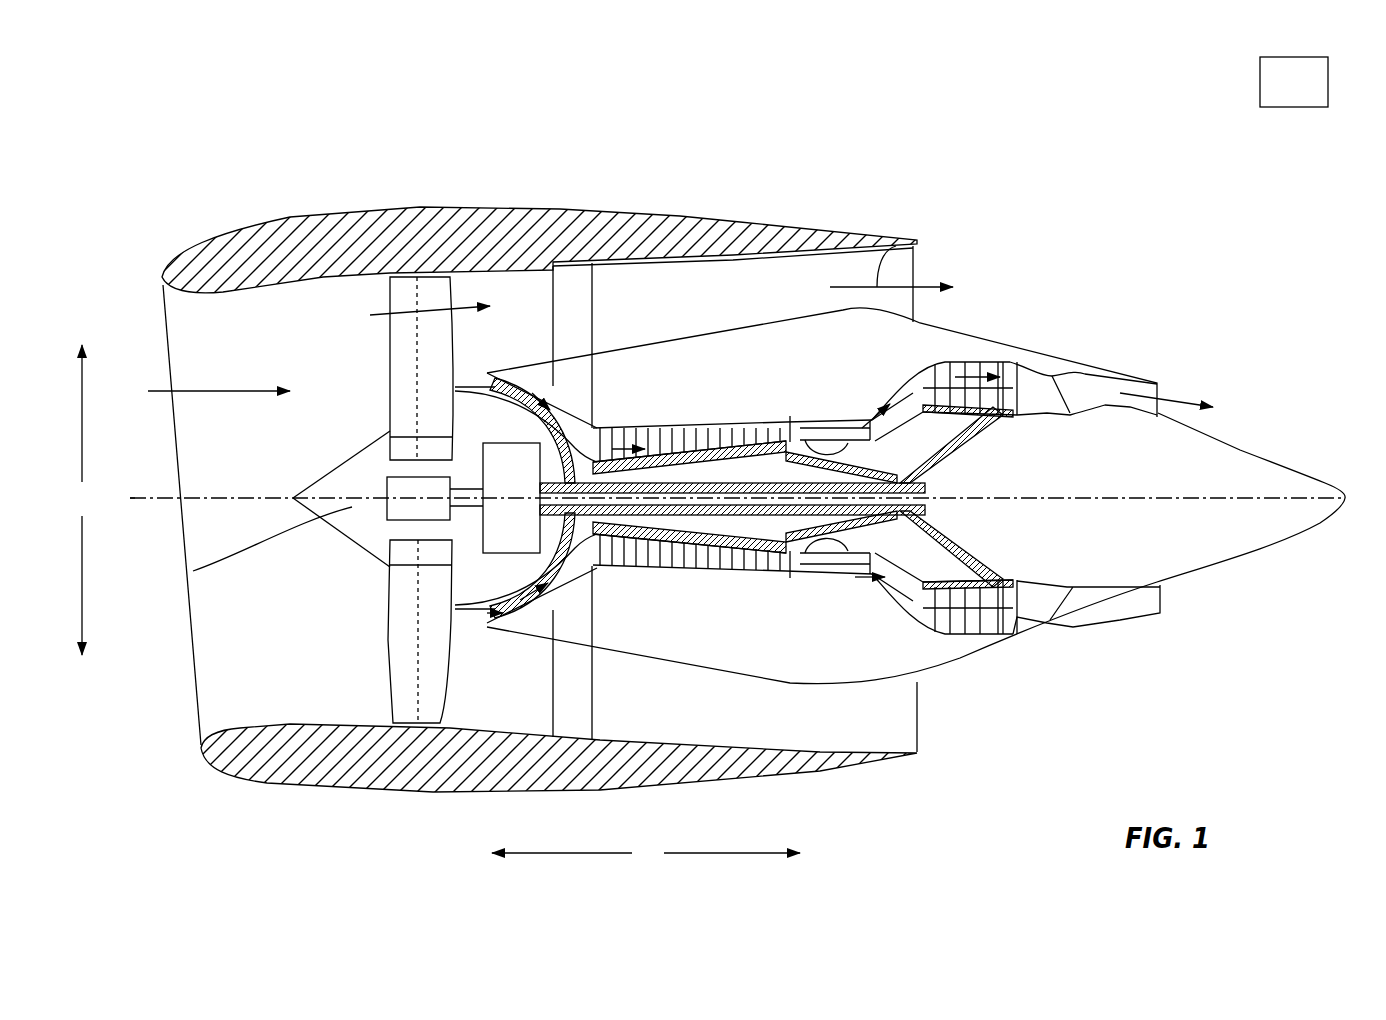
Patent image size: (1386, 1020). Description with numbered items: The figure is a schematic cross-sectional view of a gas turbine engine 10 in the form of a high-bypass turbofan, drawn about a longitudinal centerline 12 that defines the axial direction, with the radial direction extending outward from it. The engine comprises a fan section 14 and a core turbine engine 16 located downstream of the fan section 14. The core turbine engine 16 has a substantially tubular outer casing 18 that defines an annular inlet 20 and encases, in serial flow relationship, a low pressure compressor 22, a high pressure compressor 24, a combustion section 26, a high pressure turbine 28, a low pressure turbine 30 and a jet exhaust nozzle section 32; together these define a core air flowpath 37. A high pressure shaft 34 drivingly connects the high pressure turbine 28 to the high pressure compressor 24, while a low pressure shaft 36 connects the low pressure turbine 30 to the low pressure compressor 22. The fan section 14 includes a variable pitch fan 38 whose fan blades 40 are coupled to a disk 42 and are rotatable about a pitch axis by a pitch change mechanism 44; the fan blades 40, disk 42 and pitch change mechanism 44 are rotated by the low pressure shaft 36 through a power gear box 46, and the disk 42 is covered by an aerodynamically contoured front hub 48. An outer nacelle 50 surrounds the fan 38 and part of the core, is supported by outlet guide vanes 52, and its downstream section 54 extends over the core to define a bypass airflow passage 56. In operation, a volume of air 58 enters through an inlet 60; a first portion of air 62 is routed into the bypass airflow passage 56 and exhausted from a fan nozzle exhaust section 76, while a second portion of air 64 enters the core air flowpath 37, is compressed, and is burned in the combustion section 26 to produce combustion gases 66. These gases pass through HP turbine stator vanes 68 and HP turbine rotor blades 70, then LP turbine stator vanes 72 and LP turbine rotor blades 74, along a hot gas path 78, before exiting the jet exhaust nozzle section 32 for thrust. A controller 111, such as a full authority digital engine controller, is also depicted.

The gas turbine engine 10 is at (1072, 222).
The longitudinal centerline 12 is at (1095, 498).
The fan section 14 is at (348, 298).
The core turbine engine 16 is at (720, 378).
The outer casing 18 is at (765, 673).
The annular inlet 20 is at (490, 612).
The low pressure compressor 22 is at (540, 563).
The high pressure compressor 24 is at (625, 565).
The combustion section 26 is at (807, 578).
The high pressure turbine 28 is at (968, 552).
The low pressure turbine 30 is at (1005, 640).
The jet exhaust nozzle section 32 is at (1073, 622).
The high pressure shaft 34 is at (830, 468).
The low pressure shaft 36 is at (958, 450).
The core air flowpath 37 is at (585, 568).
The variable pitch fan 38 is at (349, 560).
The fan blades 40 is at (388, 658).
The disk 42 is at (388, 458).
The pitch change mechanism 44 is at (387, 481).
The power gear box 46 is at (597, 425).
The front hub 48 is at (195, 572).
The outer nacelle 50 is at (440, 795).
The outlet guide vanes 52 is at (593, 292).
The downstream section 54 is at (862, 240).
The bypass airflow passage 56 is at (752, 304).
The volume of air 58 is at (218, 390).
The inlet 60 is at (197, 728).
The first portion of air 62 is at (408, 328).
The second portion of air 64 is at (487, 372).
The combustion gases 66 is at (857, 418).
The HP turbine stator vanes 68 is at (820, 583).
The HP turbine rotor blades 70 is at (935, 528).
The LP turbine stator vanes 72 is at (920, 625).
The LP turbine rotor blades 74 is at (937, 640).
The fan nozzle exhaust section 76 is at (905, 272).
The hot gas path 78 is at (890, 402).
The controller 111 is at (1291, 108).